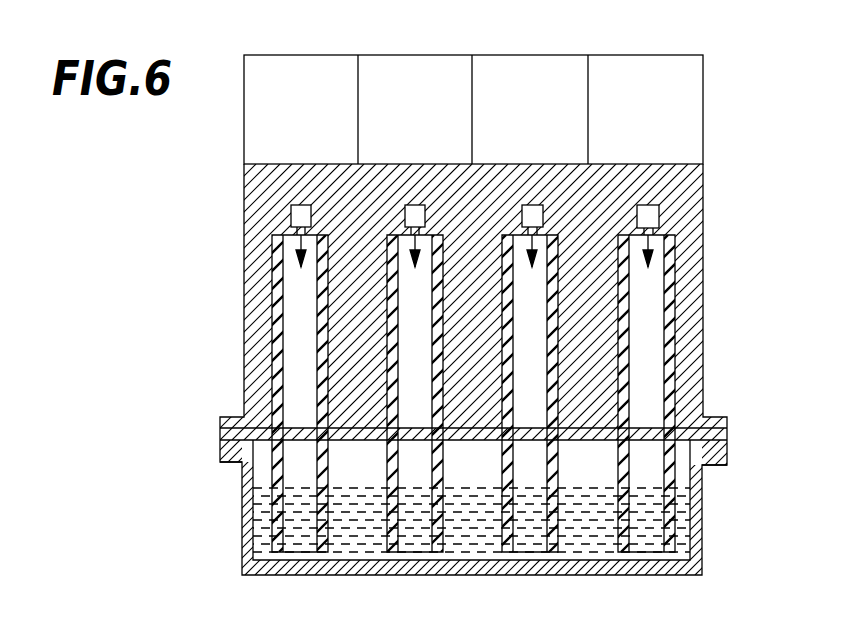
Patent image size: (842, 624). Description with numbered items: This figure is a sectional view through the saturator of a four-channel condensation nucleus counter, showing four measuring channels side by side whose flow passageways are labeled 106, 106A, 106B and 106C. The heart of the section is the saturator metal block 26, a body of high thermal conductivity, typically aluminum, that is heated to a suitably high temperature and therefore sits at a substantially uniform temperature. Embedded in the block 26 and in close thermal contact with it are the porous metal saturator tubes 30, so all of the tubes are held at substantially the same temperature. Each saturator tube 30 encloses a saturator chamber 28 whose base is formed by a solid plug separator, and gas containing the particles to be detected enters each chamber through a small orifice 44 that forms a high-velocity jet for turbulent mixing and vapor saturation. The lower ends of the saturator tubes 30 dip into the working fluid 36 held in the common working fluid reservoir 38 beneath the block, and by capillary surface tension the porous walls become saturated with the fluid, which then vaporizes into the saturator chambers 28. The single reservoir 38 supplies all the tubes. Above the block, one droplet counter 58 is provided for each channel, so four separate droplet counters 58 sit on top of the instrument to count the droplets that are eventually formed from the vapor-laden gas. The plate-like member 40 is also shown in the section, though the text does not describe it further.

The saturator metal block 26 is at (627, 192).
The saturator chamber 28 is at (300, 322).
The porous metal saturator tube 30 is at (285, 276).
The working fluid 36 is at (343, 542).
The working fluid reservoir 38 is at (240, 524).
The plate 40 is at (415, 426).
The small orifice 44 is at (650, 238).
The droplet counter 58 is at (398, 70).
The flow passageway 106 is at (661, 214).
The flow passageway 106A is at (530, 205).
The flow passageway 106B is at (414, 205).
The flow passageway 106C is at (300, 205).